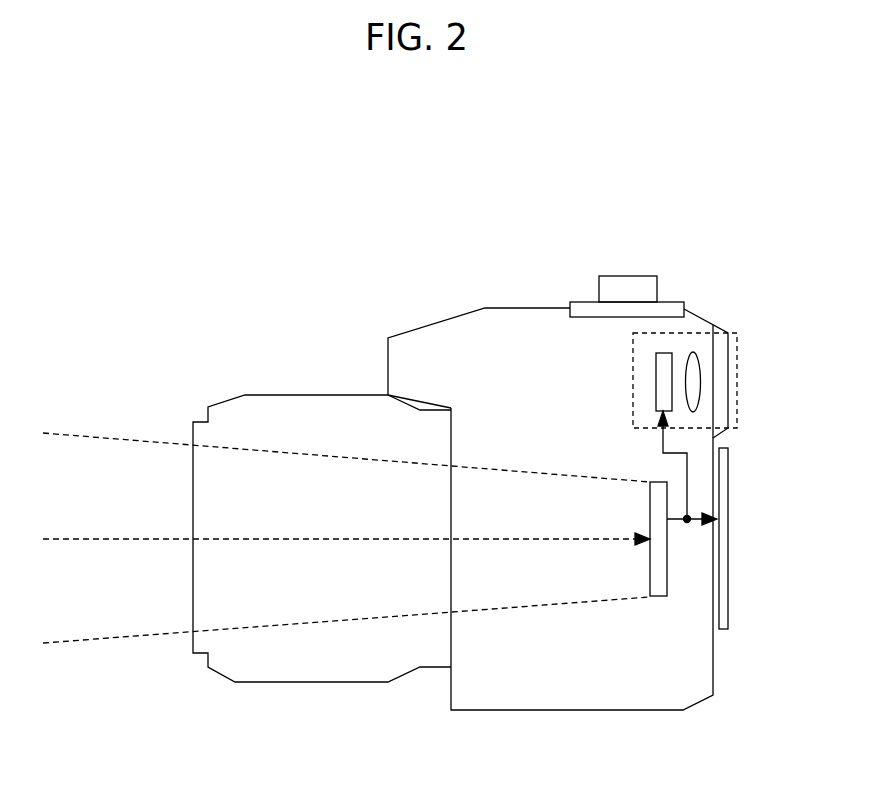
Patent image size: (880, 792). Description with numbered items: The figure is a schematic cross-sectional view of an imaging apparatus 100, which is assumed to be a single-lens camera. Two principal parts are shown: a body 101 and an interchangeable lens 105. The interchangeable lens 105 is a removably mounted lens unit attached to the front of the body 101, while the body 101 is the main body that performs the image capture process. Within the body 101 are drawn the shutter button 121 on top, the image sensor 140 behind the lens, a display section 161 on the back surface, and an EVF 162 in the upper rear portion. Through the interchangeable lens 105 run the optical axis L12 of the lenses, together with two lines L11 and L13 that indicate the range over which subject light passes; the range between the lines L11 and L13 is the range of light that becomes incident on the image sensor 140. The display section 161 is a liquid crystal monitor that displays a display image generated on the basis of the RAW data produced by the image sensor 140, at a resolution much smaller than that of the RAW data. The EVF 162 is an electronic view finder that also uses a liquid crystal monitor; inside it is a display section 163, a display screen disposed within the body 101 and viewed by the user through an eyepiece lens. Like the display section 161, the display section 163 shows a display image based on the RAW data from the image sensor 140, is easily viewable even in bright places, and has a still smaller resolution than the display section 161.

The imaging apparatus 100 is at (248, 226).
The body 101 is at (440, 318).
The interchangeable lens 105 is at (275, 394).
The shutter button 121 is at (633, 276).
The image sensor 140 is at (657, 598).
The display section 161 is at (731, 484).
The EVF 162 is at (690, 330).
The display section 163 is at (656, 372).
The line L11 is at (90, 438).
The optical axis L12 is at (90, 538).
The line L13 is at (90, 636).